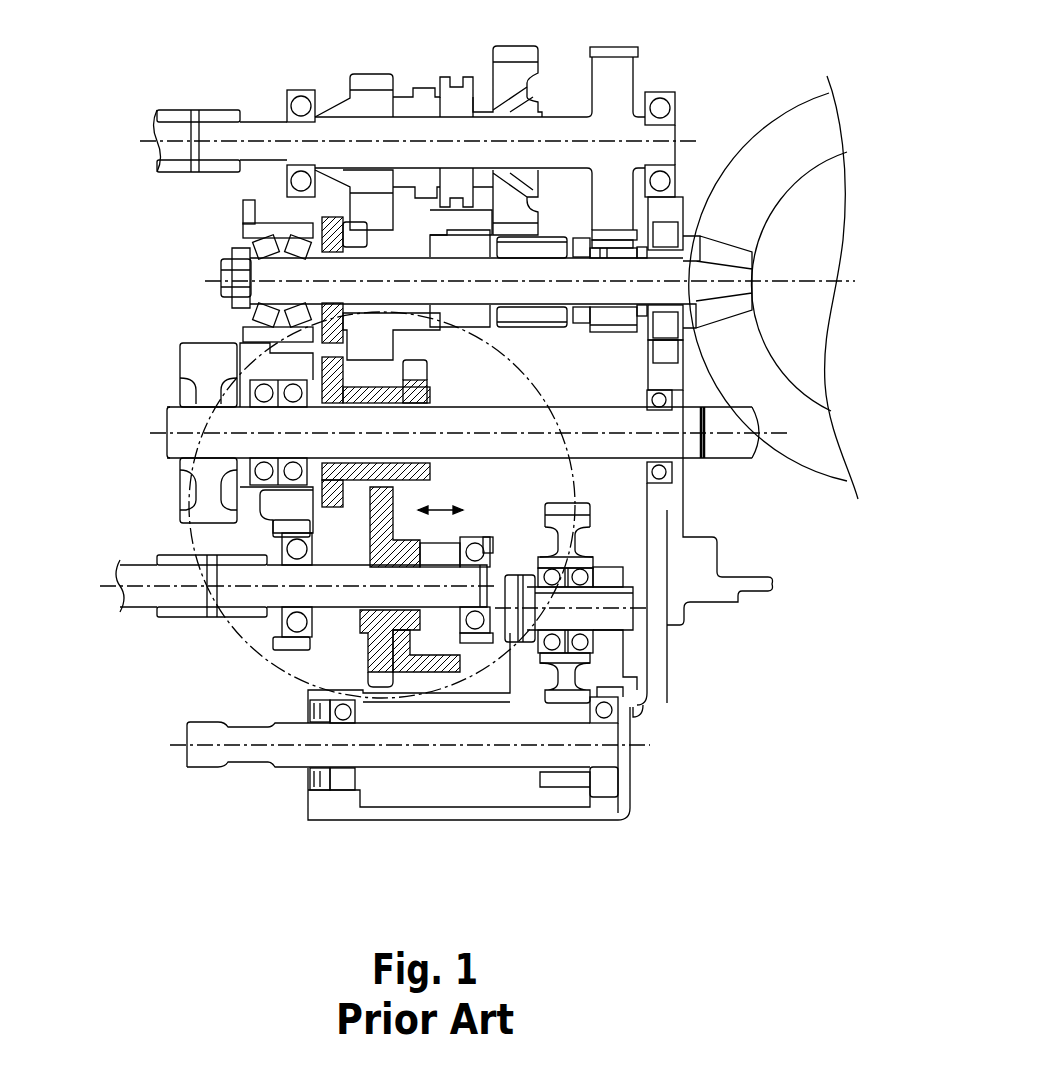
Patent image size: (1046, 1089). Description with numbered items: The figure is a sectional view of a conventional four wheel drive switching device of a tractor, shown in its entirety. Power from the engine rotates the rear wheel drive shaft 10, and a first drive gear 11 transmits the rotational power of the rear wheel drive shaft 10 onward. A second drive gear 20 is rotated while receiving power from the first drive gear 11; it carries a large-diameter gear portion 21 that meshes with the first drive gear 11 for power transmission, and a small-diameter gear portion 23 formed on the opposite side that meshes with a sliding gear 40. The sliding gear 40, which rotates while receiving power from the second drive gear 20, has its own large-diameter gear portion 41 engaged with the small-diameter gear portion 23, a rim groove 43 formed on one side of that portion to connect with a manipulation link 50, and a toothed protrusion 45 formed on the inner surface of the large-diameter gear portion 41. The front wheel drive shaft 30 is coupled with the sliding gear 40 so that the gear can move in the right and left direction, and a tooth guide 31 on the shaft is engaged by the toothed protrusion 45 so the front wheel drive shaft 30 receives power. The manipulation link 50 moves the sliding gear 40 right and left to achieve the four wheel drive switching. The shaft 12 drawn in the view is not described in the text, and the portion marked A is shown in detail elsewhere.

The rear wheel drive shaft 10 is at (267, 270).
The first drive gear 11 is at (328, 214).
The output shaft 12 is at (188, 428).
The second drive gear 20 is at (268, 357).
The large-diameter gear portion 21 is at (315, 505).
The small-diameter gear portion 23 is at (420, 490).
The front wheel drive shaft 30 is at (235, 593).
The tooth guide 31 is at (335, 602).
The sliding gear 40 is at (300, 655).
The large-diameter gear portion 41 is at (523, 640).
The rim groove 43 is at (397, 540).
The toothed protrusion 45 is at (578, 507).
The manipulation link 50 is at (442, 725).